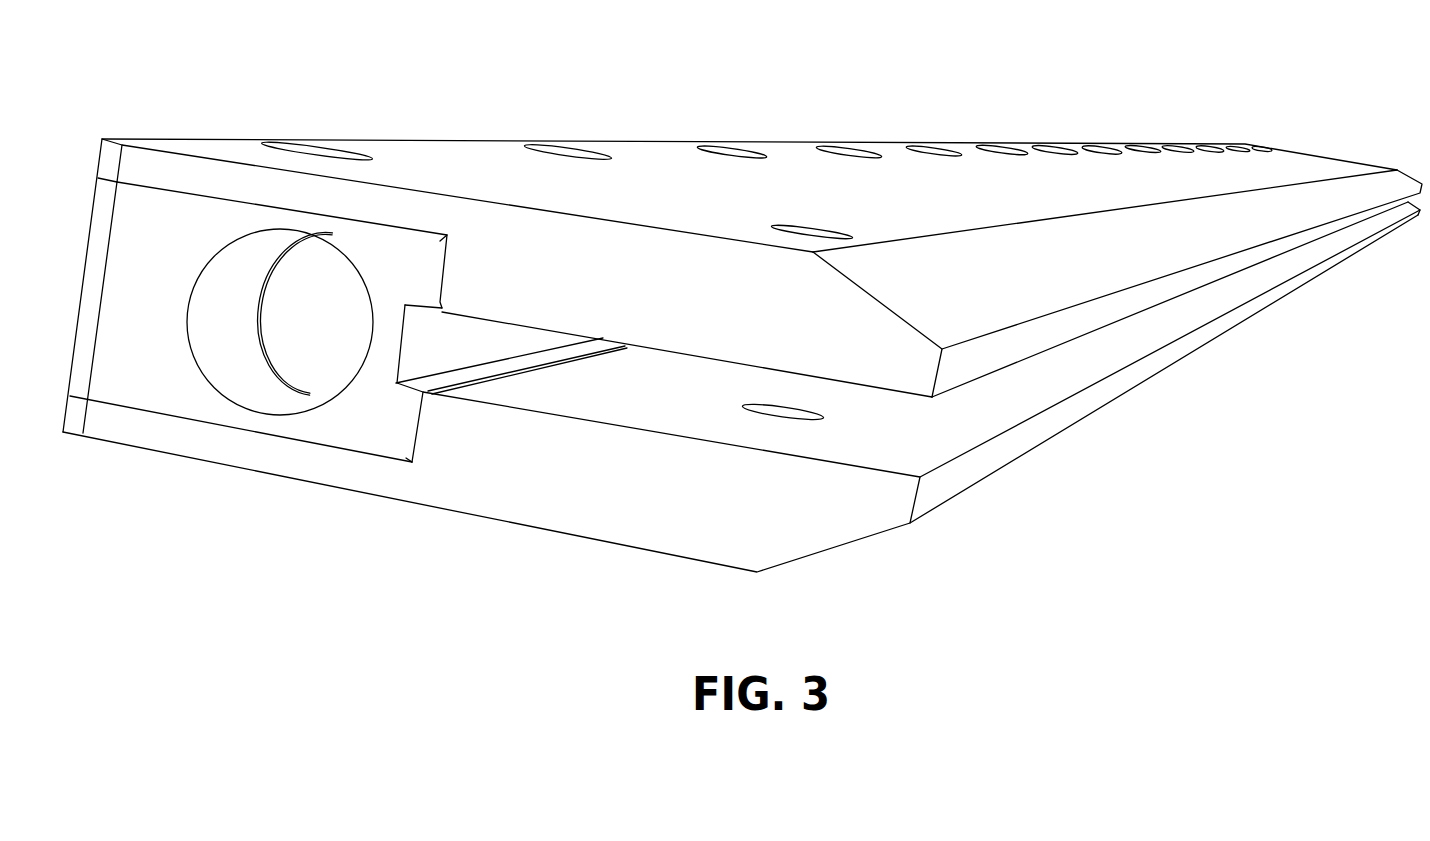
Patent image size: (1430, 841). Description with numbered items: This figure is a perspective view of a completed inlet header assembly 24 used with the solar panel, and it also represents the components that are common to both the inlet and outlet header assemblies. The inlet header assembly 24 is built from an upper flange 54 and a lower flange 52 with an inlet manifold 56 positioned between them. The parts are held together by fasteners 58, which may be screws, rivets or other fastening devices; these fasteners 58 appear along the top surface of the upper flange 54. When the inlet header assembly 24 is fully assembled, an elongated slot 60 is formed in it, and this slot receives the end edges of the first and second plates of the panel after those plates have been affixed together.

The inlet header assembly 24 is at (824, 85).
The lower flange 52 is at (445, 482).
The upper flange 54 is at (650, 173).
The inlet manifold 56 is at (127, 384).
The fasteners 58 is at (320, 145).
The elongated slot 60 is at (947, 425).